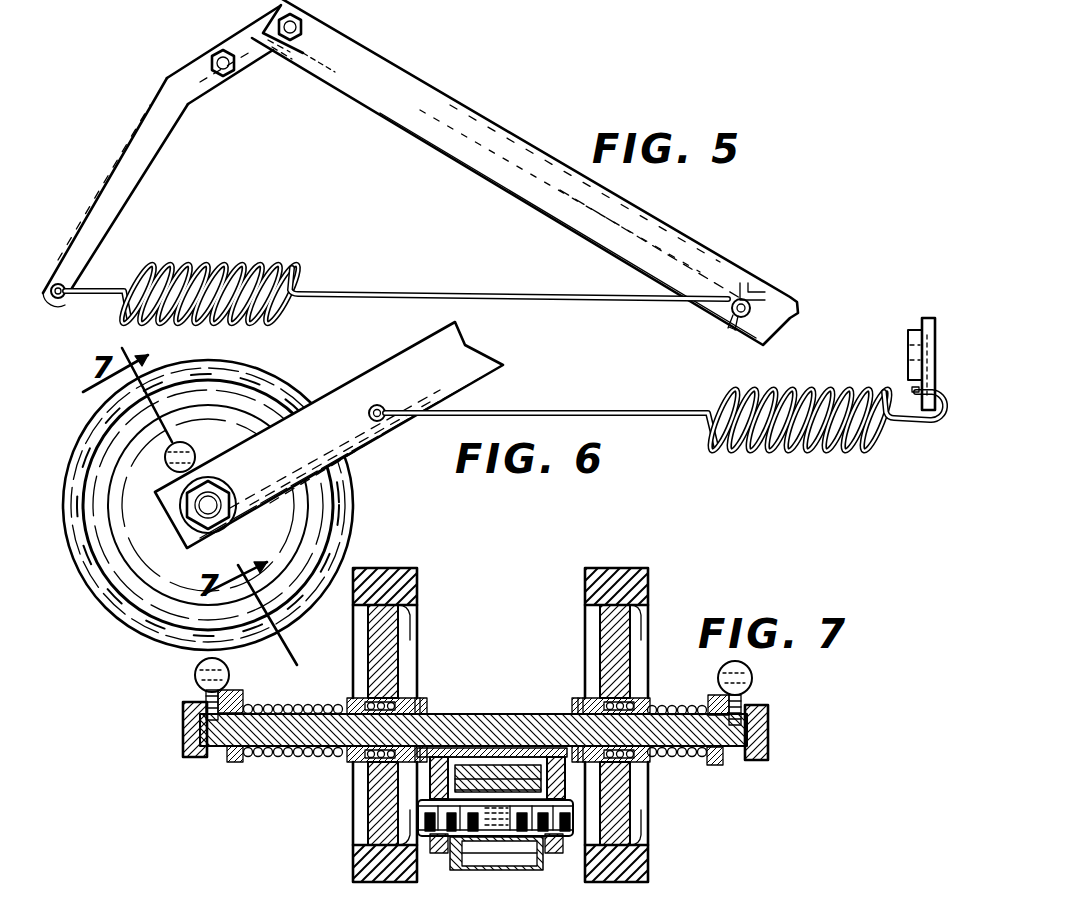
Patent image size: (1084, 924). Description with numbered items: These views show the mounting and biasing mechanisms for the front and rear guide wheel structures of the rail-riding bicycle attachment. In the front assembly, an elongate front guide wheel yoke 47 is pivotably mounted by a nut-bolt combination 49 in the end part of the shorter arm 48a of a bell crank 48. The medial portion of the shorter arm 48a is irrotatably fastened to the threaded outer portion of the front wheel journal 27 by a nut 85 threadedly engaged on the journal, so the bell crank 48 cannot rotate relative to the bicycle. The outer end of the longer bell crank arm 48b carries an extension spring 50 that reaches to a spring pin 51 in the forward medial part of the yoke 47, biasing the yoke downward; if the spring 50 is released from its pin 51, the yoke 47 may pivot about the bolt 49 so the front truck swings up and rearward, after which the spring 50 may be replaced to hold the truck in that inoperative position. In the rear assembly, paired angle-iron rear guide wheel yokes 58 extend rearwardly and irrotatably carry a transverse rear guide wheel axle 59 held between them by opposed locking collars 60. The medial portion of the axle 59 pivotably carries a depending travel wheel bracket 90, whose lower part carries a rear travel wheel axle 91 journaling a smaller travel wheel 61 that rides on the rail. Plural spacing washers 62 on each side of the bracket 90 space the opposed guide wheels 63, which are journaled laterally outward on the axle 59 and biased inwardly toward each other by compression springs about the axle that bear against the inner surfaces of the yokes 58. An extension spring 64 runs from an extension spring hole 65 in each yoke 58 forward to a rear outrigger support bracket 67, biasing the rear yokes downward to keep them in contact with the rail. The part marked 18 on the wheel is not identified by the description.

In FIG. 6, the caster wheel 18 is at (352, 503).
In FIG. 7, the caster wheel 18 is at (648, 701).
In FIG. 5, the front wheel journal 27 is at (220, 57).
In FIG. 5, the front guide wheel yoke 47 is at (405, 97).
In FIG. 5, the bell crank 48 is at (161, 156).
In FIG. 5, the shorter arm 48a is at (203, 82).
In FIG. 5, the longer bell crank arm 48b is at (110, 235).
In FIG. 5, the nut-bolt combination 49 is at (278, 19).
In FIG. 5, the extension spring 50 is at (250, 263).
In FIG. 5, the spring pin 51 is at (730, 320).
In FIG. 6, the rear guide wheel yoke 58 is at (462, 365).
In FIG. 7, the rear guide wheel yoke 58 is at (222, 690).
In FIG. 6, the rear guide wheel axle 59 is at (205, 492).
In FIG. 7, the rear guide wheel axle 59 is at (505, 722).
In FIG. 6, the locking collar 60 is at (226, 518).
In FIG. 7, the locking collar 60 is at (183, 711).
In FIG. 7, the travel wheel 61 is at (500, 868).
In FIG. 7, the spacing washer 62 is at (424, 700).
In FIG. 6, the guide wheel 63 is at (255, 380).
In FIG. 7, the guide wheel 63 is at (417, 604).
In FIG. 6, the extension spring 64 is at (740, 397).
In FIG. 6, the extension spring hole 65 is at (385, 420).
In FIG. 6, the rear outrigger support bracket 67 is at (908, 375).
In FIG. 5, the nut 85 is at (240, 70).
In FIG. 7, the travel wheel bracket 90 is at (437, 778).
In FIG. 7, the rear travel wheel axle 91 is at (562, 838).